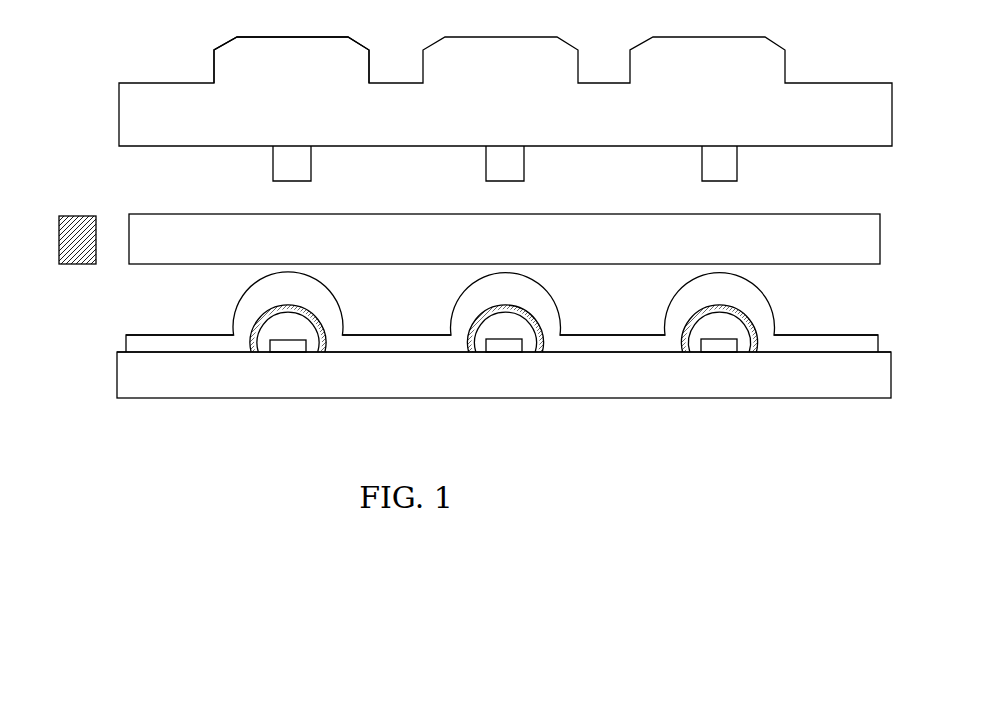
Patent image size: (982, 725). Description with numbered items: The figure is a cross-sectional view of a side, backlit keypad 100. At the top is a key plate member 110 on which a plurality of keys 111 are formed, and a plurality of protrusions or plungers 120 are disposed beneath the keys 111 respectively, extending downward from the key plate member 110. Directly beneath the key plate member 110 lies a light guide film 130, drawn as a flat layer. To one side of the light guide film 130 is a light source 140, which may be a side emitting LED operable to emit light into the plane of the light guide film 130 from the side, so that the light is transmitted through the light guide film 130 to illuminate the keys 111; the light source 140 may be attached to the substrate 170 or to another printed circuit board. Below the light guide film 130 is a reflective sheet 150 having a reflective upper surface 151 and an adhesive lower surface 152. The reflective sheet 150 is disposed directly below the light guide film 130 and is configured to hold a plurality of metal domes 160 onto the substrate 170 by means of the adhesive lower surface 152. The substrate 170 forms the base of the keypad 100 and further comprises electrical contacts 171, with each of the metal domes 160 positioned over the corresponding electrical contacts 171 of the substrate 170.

The keypad 100 is at (130, 30).
The key plate member 110 is at (202, 124).
The keys 111 is at (299, 48).
The protrusions or plungers 120 is at (282, 163).
The light guide film 130 is at (393, 259).
The light source 140 is at (59, 227).
The reflective sheet 150 is at (757, 310).
The reflective upper surface 151 is at (832, 320).
The adhesive lower surface 152 is at (835, 355).
The metal domes 160 is at (263, 318).
The substrate 170 is at (648, 387).
The electrical contacts 171 is at (507, 346).